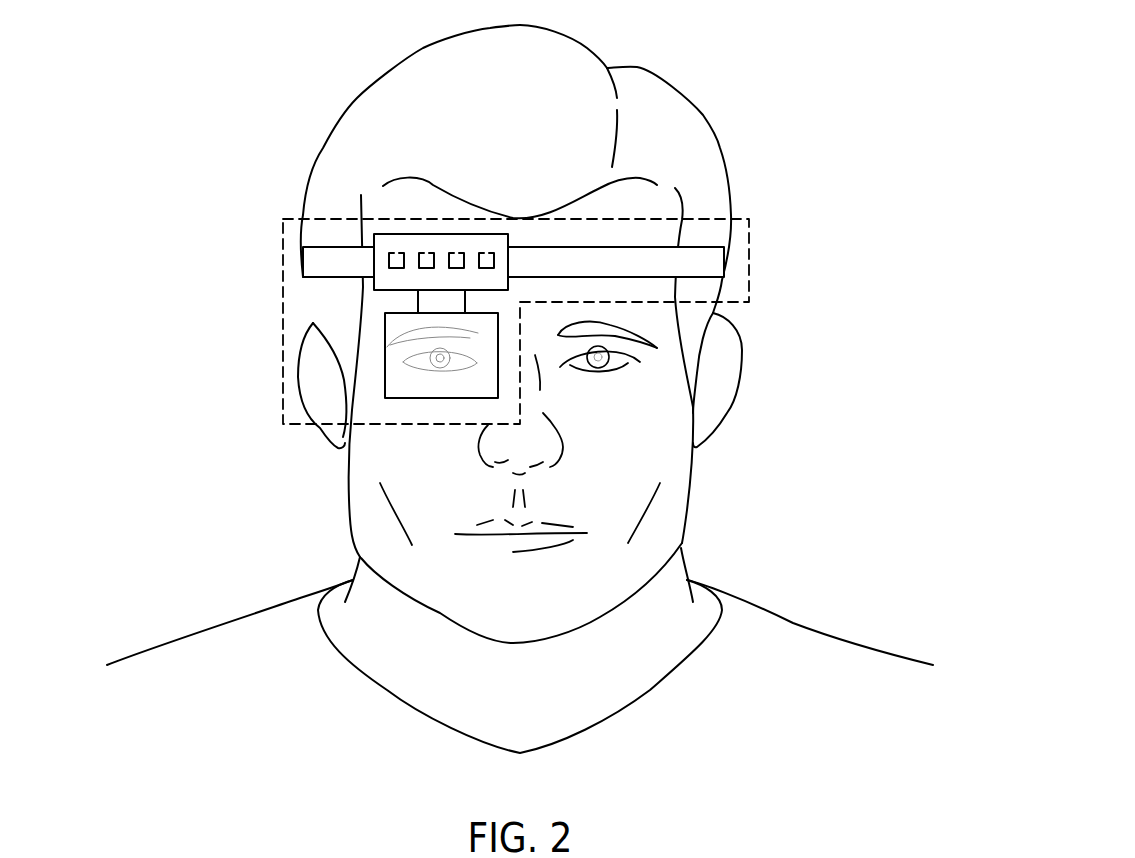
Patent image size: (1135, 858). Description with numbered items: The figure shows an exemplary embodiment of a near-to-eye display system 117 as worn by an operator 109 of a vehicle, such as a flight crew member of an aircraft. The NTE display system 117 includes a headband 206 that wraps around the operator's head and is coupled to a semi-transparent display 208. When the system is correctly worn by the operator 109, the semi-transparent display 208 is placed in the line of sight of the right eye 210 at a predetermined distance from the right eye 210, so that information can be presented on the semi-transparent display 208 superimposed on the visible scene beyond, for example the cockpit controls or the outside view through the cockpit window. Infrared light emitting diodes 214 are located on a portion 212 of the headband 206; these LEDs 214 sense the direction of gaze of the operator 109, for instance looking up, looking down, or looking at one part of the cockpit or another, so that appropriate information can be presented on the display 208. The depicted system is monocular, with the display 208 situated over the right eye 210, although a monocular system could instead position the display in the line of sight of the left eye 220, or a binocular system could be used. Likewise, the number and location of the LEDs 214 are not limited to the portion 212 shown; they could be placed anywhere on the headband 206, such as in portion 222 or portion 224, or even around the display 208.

The operator 109 is at (693, 487).
The near-to-eye display system 117 is at (749, 285).
The headband 206 is at (727, 260).
The semi-transparent display 208 is at (385, 378).
The right eye 210 is at (442, 372).
The portion of the headband 212 is at (495, 240).
The infrared light emitting diodes 214 is at (397, 253).
The left eye 220 is at (598, 372).
The portion of the headband 222 is at (312, 262).
The portion of the headband 224 is at (692, 257).